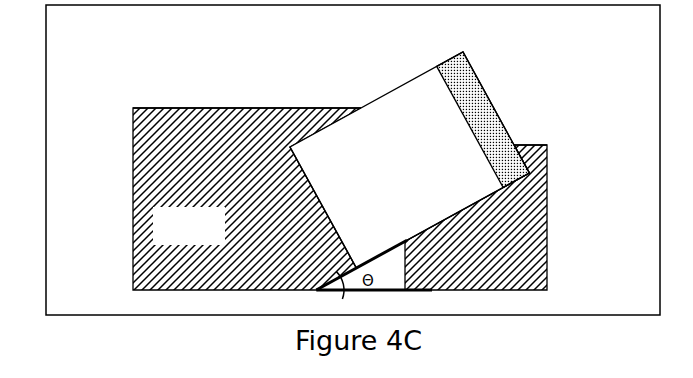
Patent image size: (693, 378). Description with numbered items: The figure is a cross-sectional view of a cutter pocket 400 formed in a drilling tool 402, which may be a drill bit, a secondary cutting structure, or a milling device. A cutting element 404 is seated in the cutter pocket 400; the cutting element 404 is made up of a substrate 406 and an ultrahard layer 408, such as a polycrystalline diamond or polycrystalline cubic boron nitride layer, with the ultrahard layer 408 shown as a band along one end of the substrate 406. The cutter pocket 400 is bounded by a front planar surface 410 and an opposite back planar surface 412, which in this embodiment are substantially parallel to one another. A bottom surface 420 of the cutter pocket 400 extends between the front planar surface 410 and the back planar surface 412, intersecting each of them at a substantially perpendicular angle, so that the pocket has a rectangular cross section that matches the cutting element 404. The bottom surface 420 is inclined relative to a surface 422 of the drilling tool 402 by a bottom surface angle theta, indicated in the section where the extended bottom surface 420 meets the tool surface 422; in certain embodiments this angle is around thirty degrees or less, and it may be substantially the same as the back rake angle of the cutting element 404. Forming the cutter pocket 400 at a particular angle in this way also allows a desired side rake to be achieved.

The cutter pocket 400 is at (330, 89).
The drilling tool 402 is at (208, 240).
The cutting element 404 is at (376, 70).
The substrate 406 is at (405, 190).
The ultrahard layer 408 is at (470, 80).
The front planar surface 410 is at (523, 159).
The back planar surface 412 is at (310, 186).
The bottom surface 420 is at (483, 202).
The surface of drilling tool 422 is at (199, 108).